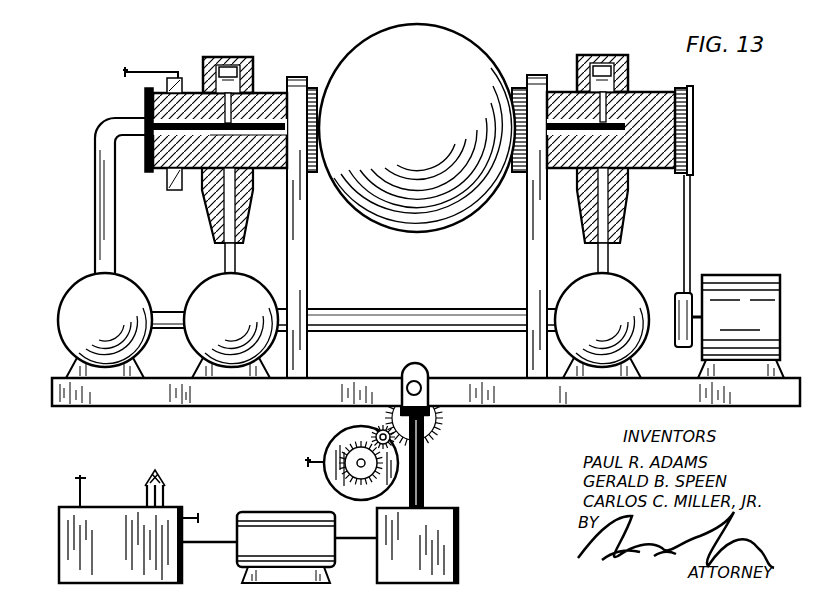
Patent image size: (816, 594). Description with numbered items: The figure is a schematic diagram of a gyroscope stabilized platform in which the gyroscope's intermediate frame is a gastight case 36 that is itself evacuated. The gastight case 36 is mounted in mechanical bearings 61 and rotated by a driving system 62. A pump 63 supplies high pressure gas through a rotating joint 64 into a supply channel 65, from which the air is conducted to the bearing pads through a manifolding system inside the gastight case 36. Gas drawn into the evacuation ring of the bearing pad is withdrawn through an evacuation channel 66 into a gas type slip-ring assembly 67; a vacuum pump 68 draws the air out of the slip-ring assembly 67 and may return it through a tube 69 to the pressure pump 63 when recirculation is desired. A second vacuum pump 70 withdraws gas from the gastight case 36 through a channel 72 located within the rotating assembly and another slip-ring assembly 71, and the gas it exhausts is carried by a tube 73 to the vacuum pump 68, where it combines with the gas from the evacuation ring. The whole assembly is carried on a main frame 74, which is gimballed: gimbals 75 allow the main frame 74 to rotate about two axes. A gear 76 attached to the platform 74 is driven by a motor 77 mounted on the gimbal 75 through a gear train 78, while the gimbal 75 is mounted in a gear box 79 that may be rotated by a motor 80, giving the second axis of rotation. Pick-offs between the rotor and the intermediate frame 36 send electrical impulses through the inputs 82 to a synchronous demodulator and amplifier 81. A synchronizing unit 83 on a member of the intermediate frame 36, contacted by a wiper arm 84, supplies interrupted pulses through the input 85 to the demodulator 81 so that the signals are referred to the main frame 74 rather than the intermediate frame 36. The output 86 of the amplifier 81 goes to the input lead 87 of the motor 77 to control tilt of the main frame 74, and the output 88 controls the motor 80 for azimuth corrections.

The gastight case 36 is at (422, 134).
The mechanical bearings 61 is at (295, 77).
The driving system 62 is at (744, 322).
The pump 63 is at (108, 305).
The rotating joint 64 is at (145, 100).
The supply channel 65 is at (200, 100).
The evacuation channel 66 is at (268, 105).
The gas type slip-ring assembly 67 is at (228, 70).
The vacuum pump 68 is at (234, 305).
The tube 69 is at (170, 311).
The vacuum pump 70 is at (604, 303).
The slip-ring assembly 71 is at (600, 57).
The channel 72 is at (566, 130).
The tube 73 is at (431, 320).
The main frame 74 is at (263, 406).
The gimbals 75 is at (425, 470).
The gear 76 is at (426, 407).
The motor 77 is at (351, 475).
The gear train 78 is at (363, 480).
The gear box 79 is at (408, 580).
The motor 80 is at (296, 553).
The synchronous demodulator and amplifier 81 is at (121, 545).
The inputs 82 is at (157, 480).
The synchronizing unit 83 is at (178, 190).
The wiper arm 84 is at (140, 72).
The input 85 is at (84, 497).
The output 86 is at (195, 518).
The input lead 87 is at (311, 467).
The output 88 is at (215, 542).